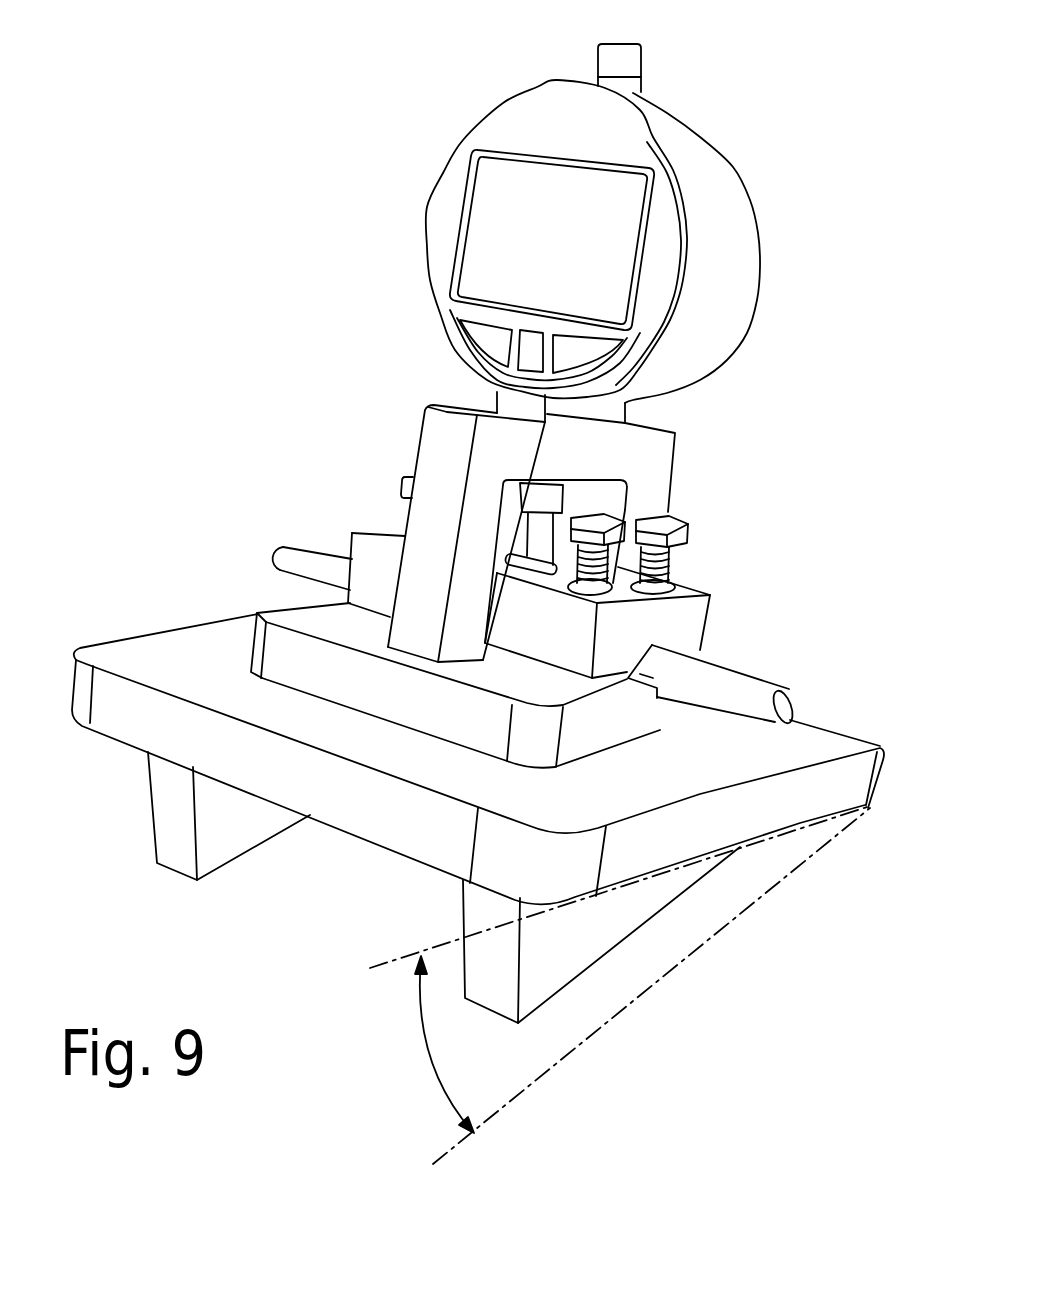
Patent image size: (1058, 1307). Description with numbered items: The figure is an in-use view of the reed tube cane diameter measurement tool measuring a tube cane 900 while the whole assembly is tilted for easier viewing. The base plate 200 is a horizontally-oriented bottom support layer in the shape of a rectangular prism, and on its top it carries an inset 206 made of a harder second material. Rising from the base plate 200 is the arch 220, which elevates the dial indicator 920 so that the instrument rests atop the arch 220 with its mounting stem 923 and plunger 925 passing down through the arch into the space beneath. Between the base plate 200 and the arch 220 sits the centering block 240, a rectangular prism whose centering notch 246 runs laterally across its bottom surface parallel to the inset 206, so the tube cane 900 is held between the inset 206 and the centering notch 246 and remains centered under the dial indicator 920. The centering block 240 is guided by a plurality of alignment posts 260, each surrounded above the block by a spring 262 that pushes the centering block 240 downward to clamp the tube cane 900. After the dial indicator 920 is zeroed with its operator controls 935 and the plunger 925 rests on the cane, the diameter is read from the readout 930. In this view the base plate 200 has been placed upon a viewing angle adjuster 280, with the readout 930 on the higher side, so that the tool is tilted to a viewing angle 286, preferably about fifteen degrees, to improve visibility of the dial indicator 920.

The base plate 200 is at (292, 657).
The inset 206 is at (657, 694).
The arch 220 is at (450, 432).
The centering block 240 is at (700, 592).
The centering notch 246 is at (665, 635).
The alignment posts 260 is at (600, 517).
The spring 262 is at (667, 562).
The viewing angle adjuster 280 is at (356, 806).
The viewing angle 286 is at (424, 1053).
The tube cane 900 is at (295, 552).
The dial indicator 920 is at (522, 118).
The mounting stem 923 is at (553, 490).
The plunger 925 is at (538, 542).
The readout 930 is at (455, 223).
The operator controls 935 is at (452, 313).